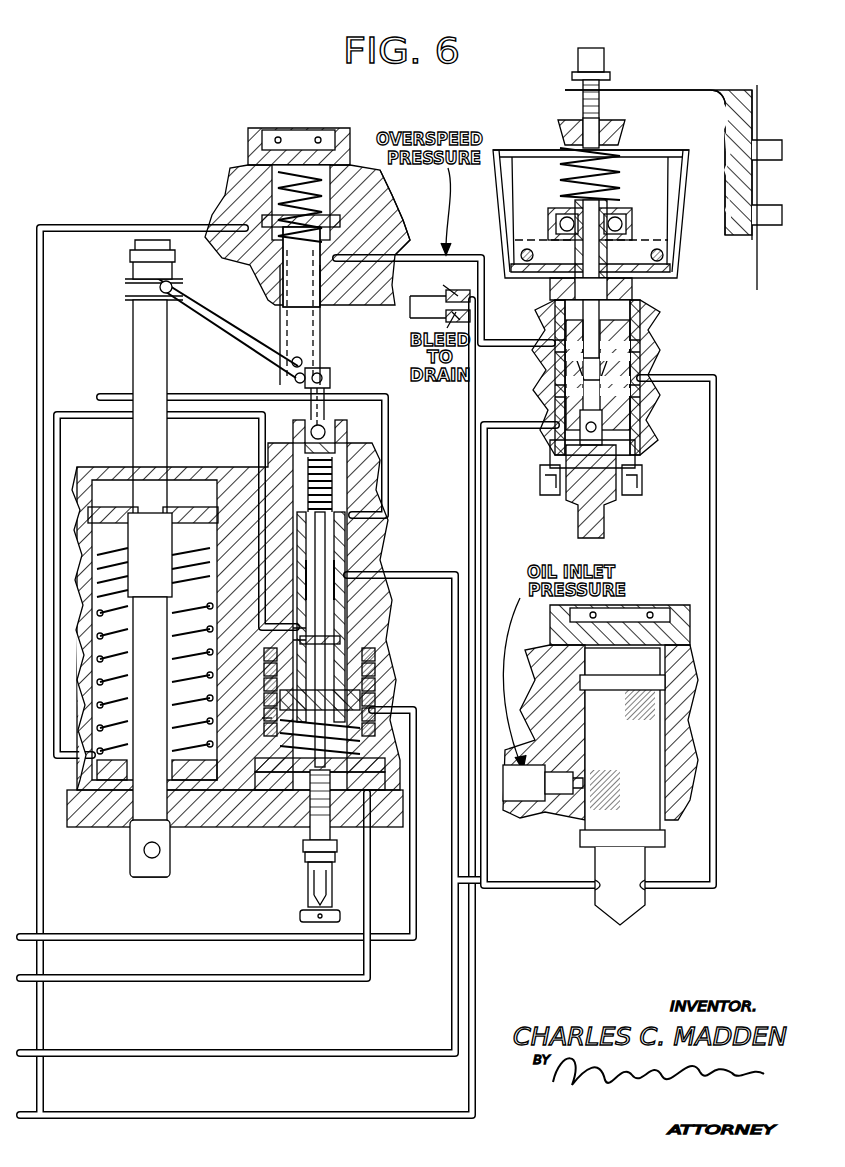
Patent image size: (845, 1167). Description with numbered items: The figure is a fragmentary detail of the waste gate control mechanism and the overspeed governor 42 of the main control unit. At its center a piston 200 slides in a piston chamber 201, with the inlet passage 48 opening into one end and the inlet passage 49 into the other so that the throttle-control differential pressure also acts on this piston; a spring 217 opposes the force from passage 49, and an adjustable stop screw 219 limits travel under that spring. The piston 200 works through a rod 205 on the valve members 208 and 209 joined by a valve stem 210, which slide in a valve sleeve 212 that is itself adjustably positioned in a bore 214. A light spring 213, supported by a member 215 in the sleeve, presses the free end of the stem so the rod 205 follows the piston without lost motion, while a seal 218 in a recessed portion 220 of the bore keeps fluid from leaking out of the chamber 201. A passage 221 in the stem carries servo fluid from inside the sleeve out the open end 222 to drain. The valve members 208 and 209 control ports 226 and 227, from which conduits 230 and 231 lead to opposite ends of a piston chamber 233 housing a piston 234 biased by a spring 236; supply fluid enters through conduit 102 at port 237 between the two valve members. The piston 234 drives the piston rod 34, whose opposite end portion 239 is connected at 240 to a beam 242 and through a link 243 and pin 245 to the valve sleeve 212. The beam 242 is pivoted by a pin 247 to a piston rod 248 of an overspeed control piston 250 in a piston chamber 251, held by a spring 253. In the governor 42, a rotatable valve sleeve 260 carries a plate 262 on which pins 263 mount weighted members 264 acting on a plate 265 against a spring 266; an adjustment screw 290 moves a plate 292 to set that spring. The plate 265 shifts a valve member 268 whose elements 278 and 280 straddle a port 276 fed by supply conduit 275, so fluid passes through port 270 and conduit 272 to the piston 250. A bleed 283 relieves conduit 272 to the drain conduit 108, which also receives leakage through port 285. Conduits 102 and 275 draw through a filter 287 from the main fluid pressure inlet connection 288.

The piston rod 34 is at (130, 857).
The overspeed governor 42 is at (697, 283).
The fluid pressure inlet passage 48 is at (180, 935).
The fluid pressure inlet passage 49 is at (180, 975).
The fluid supply conduit 102 is at (170, 1050).
The drain conduit 108 is at (170, 1112).
The piston 200 is at (270, 792).
The piston chamber 201 is at (262, 718).
The rod 205 is at (376, 700).
The valve member 208 is at (340, 638).
The valve member 209 is at (306, 523).
The valve stem 210 is at (345, 553).
The valve sleeve 212 is at (347, 432).
The light spring 213 is at (332, 471).
The bore 214 is at (376, 655).
The member 215 is at (305, 455).
The spring 217 is at (382, 730).
The seal 218 is at (266, 686).
The adjustable stop screw 219 is at (318, 825).
The recessed portion 220 is at (270, 700).
The passage 221 is at (326, 603).
The open end 222 is at (335, 403).
The port 226 is at (300, 630).
The port 227 is at (362, 512).
The conduit 230 is at (266, 530).
The conduit 231 is at (230, 401).
The piston chamber 233 is at (225, 753).
The piston 234 is at (222, 507).
The spring 236 is at (197, 656).
The port 237 is at (345, 581).
The end portion of piston rod 239 is at (136, 381).
The connection 240 is at (172, 287).
The beam 242 is at (236, 333).
The link 243 is at (331, 385).
The pin 245 is at (301, 383).
The pin 247 is at (303, 360).
The piston rod 248 is at (321, 322).
The overspeed control piston 250 is at (330, 240).
The piston chamber 251 is at (381, 207).
The spring 253 is at (272, 202).
The rotatable valve sleeve 260 is at (606, 500).
The plate 262 is at (650, 281).
The pins 263 is at (528, 262).
The weighted members 264 is at (514, 150).
The plate 265 is at (641, 230).
The spring 266 is at (565, 150).
The valve member 268 is at (600, 326).
The port 270 is at (556, 372).
The conduit 272 is at (522, 346).
The fluid supply conduit 275 is at (716, 549).
The port 276 is at (612, 381).
The valve element 278 is at (602, 362).
The valve element 280 is at (604, 410).
The bleed 283 is at (452, 296).
The port 285 is at (560, 430).
The filter 287 is at (606, 767).
The main fluid pressure inlet connection 288 is at (562, 786).
The adjustment screw 290 is at (588, 62).
The plate 292 is at (574, 112).